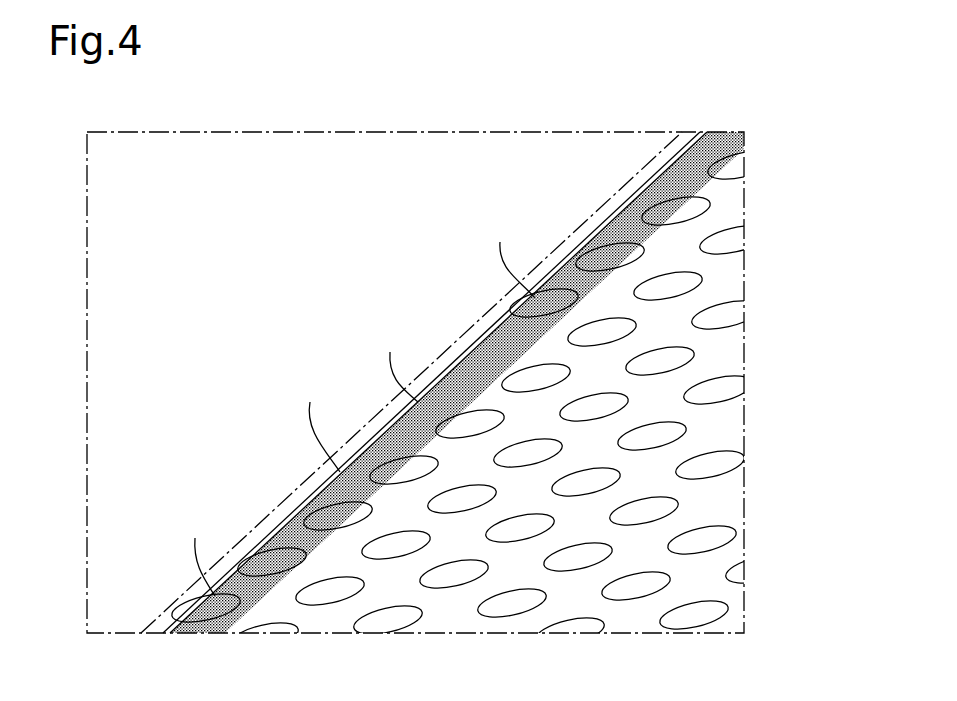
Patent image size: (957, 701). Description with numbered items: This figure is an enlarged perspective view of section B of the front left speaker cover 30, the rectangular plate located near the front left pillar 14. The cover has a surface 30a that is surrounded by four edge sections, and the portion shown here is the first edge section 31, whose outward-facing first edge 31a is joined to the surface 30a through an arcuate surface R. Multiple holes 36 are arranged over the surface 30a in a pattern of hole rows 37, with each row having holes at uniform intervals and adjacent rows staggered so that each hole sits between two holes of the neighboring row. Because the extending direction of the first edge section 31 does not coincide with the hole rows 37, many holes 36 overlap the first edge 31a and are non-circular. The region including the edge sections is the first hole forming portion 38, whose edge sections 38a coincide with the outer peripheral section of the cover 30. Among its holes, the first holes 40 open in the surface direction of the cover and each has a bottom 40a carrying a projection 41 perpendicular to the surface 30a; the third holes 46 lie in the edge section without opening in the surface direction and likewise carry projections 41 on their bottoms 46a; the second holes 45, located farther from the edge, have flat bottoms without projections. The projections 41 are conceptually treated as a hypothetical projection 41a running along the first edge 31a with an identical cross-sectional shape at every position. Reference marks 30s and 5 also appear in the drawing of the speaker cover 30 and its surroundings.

The front left speaker cover 30 is at (481, 348).
The plate surface 30s is at (415, 382).
The front left pillar 14 is at (608, 203).
The holes 36 is at (453, 590).
The first hole forming portion 38 is at (740, 452).
The first edge section 31 is at (322, 496).
The edge sections of the first hole forming portion 38a is at (438, 382).
The third holes 46 is at (321, 426).
The bottom of third hole 46a is at (665, 205).
The first holes 40 is at (335, 406).
The bottom of first hole 40a is at (492, 330).
The projections 41 is at (687, 227).
The hypothetical projection 41a is at (267, 628).
The hole rows 37 is at (755, 160).
The second holes 45 is at (724, 302).
The direction 5 is at (465, 260).
The first edge 31a is at (247, 540).
The arcuate surface R is at (285, 522).
The surface 30a is at (738, 522).
The section B is at (745, 618).